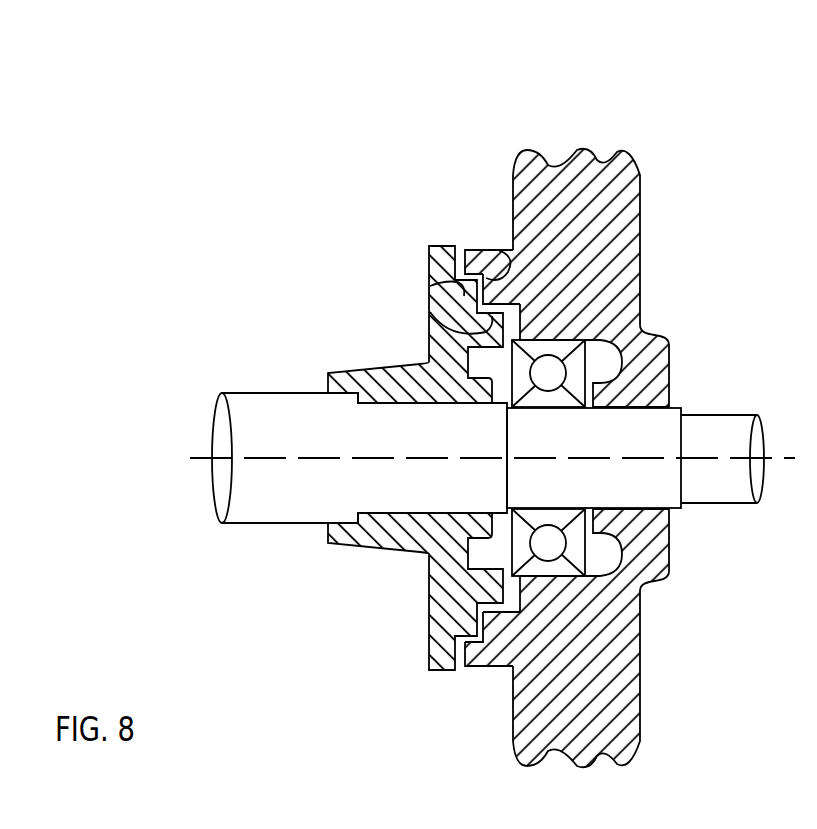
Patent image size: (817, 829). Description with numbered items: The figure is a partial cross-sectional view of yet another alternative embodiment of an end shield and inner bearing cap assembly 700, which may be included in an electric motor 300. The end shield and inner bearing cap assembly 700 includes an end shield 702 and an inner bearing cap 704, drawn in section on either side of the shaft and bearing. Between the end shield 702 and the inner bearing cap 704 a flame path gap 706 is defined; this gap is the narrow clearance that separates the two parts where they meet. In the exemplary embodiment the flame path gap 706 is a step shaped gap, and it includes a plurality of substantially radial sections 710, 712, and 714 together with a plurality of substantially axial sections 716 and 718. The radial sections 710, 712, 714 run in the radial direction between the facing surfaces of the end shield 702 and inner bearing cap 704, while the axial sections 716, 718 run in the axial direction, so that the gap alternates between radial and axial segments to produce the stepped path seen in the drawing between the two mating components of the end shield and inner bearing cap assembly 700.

The electric motor 300 is at (636, 72).
The end shield and inner bearing cap assembly 700 is at (568, 130).
The end shield 702 is at (669, 368).
The inner bearing cap 704 is at (428, 343).
The flame path gap 706 is at (512, 293).
The substantially radial section 710 is at (523, 306).
The substantially radial section 712 is at (510, 248).
The substantially radial section 714 is at (478, 255).
The substantially axial section 716 is at (430, 313).
The substantially axial section 718 is at (432, 285).